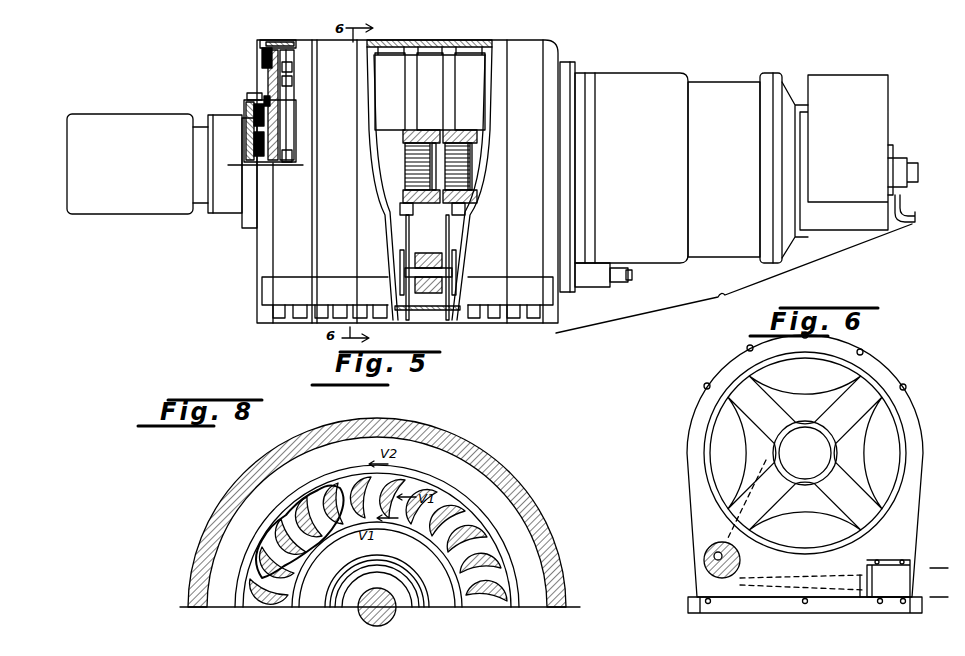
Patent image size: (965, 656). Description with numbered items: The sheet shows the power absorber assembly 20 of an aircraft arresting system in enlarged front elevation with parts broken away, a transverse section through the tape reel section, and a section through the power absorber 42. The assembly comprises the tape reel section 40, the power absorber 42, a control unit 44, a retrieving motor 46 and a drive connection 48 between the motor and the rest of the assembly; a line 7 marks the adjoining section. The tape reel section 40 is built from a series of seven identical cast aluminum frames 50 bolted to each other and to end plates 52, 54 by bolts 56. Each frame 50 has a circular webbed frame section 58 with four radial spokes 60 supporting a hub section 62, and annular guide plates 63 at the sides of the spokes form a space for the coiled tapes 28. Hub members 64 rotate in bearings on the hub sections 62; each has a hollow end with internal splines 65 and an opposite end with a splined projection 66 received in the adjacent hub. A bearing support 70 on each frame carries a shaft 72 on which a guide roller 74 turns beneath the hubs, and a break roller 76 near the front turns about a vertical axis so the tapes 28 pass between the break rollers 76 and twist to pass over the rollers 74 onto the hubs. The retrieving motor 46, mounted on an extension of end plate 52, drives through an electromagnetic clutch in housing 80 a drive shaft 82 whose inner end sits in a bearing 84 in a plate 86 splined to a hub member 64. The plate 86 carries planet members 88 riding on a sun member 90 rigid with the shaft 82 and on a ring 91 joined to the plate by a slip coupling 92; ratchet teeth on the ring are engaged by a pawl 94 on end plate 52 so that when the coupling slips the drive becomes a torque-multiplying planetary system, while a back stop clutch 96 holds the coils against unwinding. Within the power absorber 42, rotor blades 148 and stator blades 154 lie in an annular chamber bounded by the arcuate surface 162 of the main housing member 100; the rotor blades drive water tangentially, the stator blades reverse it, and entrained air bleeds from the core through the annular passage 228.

In FIG. 5, the section line 7 is at (734, 278).
In FIG. 5, the power absorber assembly 20 is at (586, 57).
In FIG. 6, the tapes 28 is at (936, 568).
In FIG. 5, the tape reel section 40 is at (405, 40).
In FIG. 5, the power absorber 42 is at (660, 74).
In FIG. 5, the control unit 44 is at (603, 285).
In FIG. 5, the retrieving motor 46 is at (147, 114).
In FIG. 5, the drive connection 48 is at (197, 111).
In FIG. 5, the frames 50 is at (342, 131).
In FIG. 6, the frames 50 is at (897, 366).
In FIG. 5, the end plate 52 is at (266, 58).
In FIG. 5, the end plate 54 is at (563, 60).
In FIG. 6, the bolts 56 is at (702, 386).
In FIG. 6, the webbed frame section 58 is at (910, 502).
In FIG. 6, the spokes 60 is at (854, 480).
In FIG. 5, the hub section 62 is at (403, 130).
In FIG. 6, the hub section 62 is at (802, 426).
In FIG. 5, the guide plates 63 is at (412, 90).
In FIG. 5, the hub members 64 is at (418, 130).
In FIG. 5, the internal splines 65 is at (408, 184).
In FIG. 5, the projection 66 is at (458, 162).
In FIG. 5, the bearing support 70 is at (400, 262).
In FIG. 5, the shaft 72 is at (434, 256).
In FIG. 5, the guide roller 74 is at (430, 300).
In FIG. 6, the guide roller 74 is at (697, 563).
In FIG. 6, the break roller 76 is at (898, 600).
In FIG. 5, the housing 80 is at (235, 208).
In FIG. 5, the drive shaft 82 is at (284, 163).
In FIG. 5, the bearing 84 is at (292, 140).
In FIG. 5, the plate 86 is at (290, 132).
In FIG. 5, the planet members 88 is at (247, 96).
In FIG. 5, the sun member 90 is at (268, 152).
In FIG. 5, the ring 91 is at (292, 72).
In FIG. 5, the slip coupling 92 is at (292, 86).
In FIG. 5, the pawl 94 is at (296, 42).
In FIG. 5, the back stop clutch 96 is at (268, 92).
In FIG. 8, the main housing member 100 is at (280, 444).
In FIG. 8, the rotor blades 148 is at (395, 512).
In FIG. 8, the stator blades 154 is at (312, 548).
In FIG. 8, the annular arcuate surface 162 is at (456, 452).
In FIG. 8, the annular passage 228 is at (428, 598).